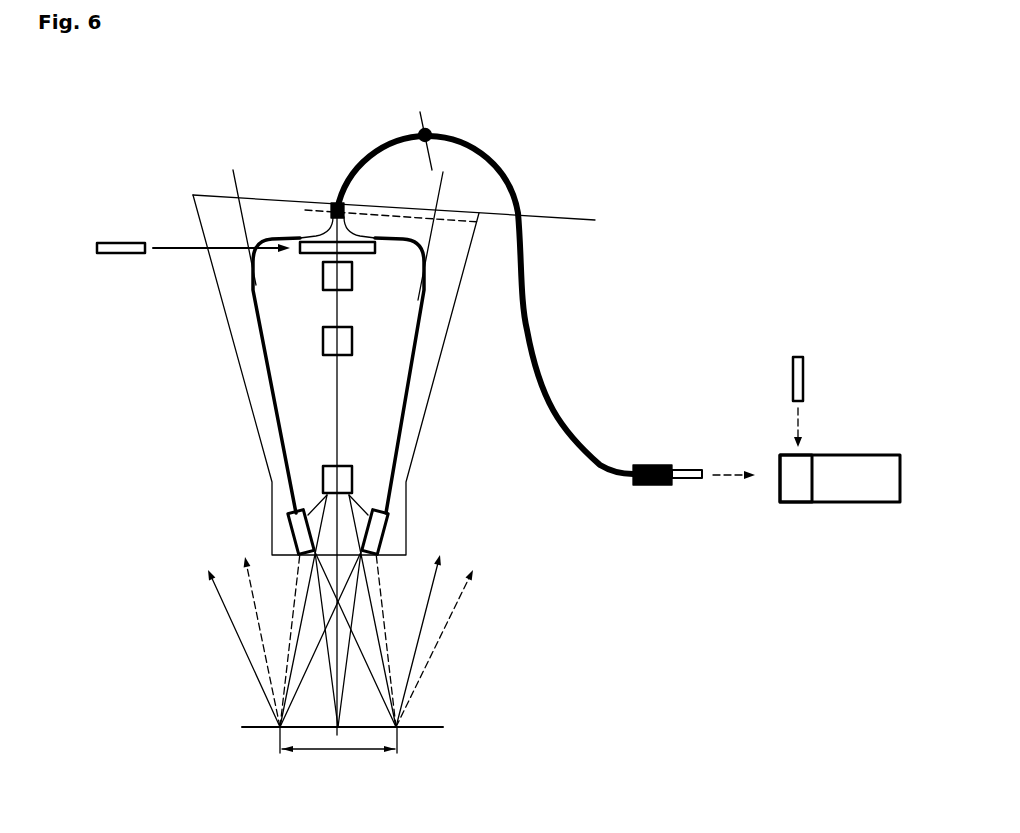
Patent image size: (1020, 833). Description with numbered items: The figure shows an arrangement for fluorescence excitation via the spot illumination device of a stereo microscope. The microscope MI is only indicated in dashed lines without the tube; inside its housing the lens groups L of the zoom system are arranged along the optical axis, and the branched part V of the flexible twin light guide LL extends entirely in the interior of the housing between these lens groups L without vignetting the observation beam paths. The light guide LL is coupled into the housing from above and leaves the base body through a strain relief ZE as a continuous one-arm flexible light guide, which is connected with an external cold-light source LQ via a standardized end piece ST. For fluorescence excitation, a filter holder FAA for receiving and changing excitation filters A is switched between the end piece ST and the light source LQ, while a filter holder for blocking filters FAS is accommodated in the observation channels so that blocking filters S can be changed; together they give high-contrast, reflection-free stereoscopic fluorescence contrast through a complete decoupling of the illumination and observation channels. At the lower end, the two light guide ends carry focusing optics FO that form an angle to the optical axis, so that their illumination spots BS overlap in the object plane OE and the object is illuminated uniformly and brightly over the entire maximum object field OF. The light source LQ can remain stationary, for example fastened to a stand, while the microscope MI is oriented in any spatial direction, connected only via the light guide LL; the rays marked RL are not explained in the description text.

The microscope MI is at (213, 195).
The filter holder for blocking filters FAS is at (318, 243).
The strain relief ZE is at (432, 134).
The lens groups L is at (323, 270).
The blocking filters S is at (97, 247).
The twin light guide LL is at (527, 267).
The branch of the light guide V is at (277, 392).
The excitation filters A is at (793, 368).
The standardized end piece ST is at (647, 485).
The focusing optics FO is at (368, 527).
The reflected light ray RL is at (253, 595).
The filter holder FAA is at (798, 482).
The cold-light source LQ is at (863, 480).
The object field OF is at (400, 660).
The illumination spots BS is at (290, 633).
The object plane OE is at (285, 753).